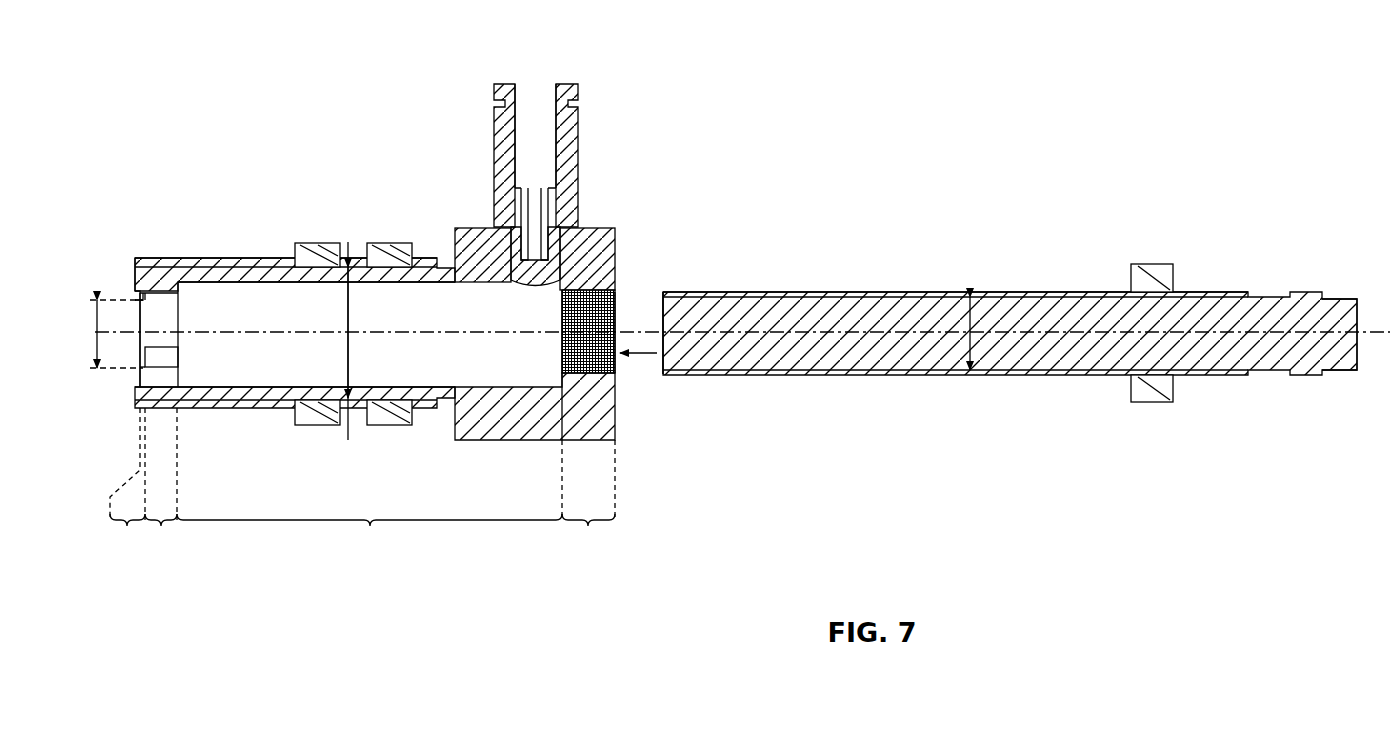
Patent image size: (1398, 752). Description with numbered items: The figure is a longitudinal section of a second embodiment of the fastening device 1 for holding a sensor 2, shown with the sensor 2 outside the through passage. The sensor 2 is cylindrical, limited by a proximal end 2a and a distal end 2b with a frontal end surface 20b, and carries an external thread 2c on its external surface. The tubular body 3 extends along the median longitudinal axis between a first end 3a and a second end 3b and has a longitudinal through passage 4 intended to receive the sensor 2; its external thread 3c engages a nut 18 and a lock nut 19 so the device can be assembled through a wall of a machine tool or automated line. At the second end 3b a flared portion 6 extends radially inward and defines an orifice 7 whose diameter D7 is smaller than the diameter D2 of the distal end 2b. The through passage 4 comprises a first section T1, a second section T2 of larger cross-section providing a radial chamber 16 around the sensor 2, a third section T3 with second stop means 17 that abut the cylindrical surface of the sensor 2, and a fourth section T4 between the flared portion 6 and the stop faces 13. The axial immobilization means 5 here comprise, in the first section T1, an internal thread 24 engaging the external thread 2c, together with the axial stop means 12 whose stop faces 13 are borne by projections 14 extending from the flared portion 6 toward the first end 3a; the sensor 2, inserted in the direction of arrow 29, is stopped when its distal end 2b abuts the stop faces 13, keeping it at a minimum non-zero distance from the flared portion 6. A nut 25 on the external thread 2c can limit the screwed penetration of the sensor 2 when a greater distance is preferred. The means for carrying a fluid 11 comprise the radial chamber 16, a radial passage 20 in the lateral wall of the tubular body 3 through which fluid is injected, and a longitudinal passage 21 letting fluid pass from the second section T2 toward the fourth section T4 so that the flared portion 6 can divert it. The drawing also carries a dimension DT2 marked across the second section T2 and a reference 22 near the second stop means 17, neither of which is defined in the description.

The fastening device 1 is at (725, 285).
The sensor 2 is at (1200, 280).
The proximal end 2a is at (1358, 298).
The distal end 2b is at (665, 290).
The external thread 2c is at (765, 292).
The tubular body 3 is at (252, 250).
The first end 3a is at (608, 228).
The second end 3b is at (133, 294).
The external thread 3c is at (193, 262).
The longitudinal through passage 4 is at (440, 315).
The axial immobilization means 5 is at (620, 315).
The flared portion 6 is at (140, 367).
The orifice 7 is at (138, 303).
The means for carrying a fluid 11 is at (535, 122).
The axial stop means 12 is at (140, 357).
The stop face 13 is at (150, 358).
The projections 14 is at (140, 357).
The radial chamber 16 is at (463, 228).
The second stop means 17 is at (167, 297).
The nut 18 is at (318, 243).
The lock nut 19 is at (390, 243).
The radial passage 20 is at (532, 270).
The frontal end surface 20b is at (661, 373).
The longitudinal passage 21 is at (152, 387).
The groove 22 is at (168, 292).
The internal thread 24 is at (563, 363).
The nut 25 is at (1155, 264).
The arrow 29 is at (638, 356).
The diameter of the distal end D2 is at (972, 330).
The diameter of the orifice D7 is at (103, 334).
The tube diameter DT2 is at (350, 356).
The first section T1 is at (588, 536).
The second section T2 is at (369, 536).
The third section T3 is at (161, 536).
The fourth section T4 is at (127, 536).